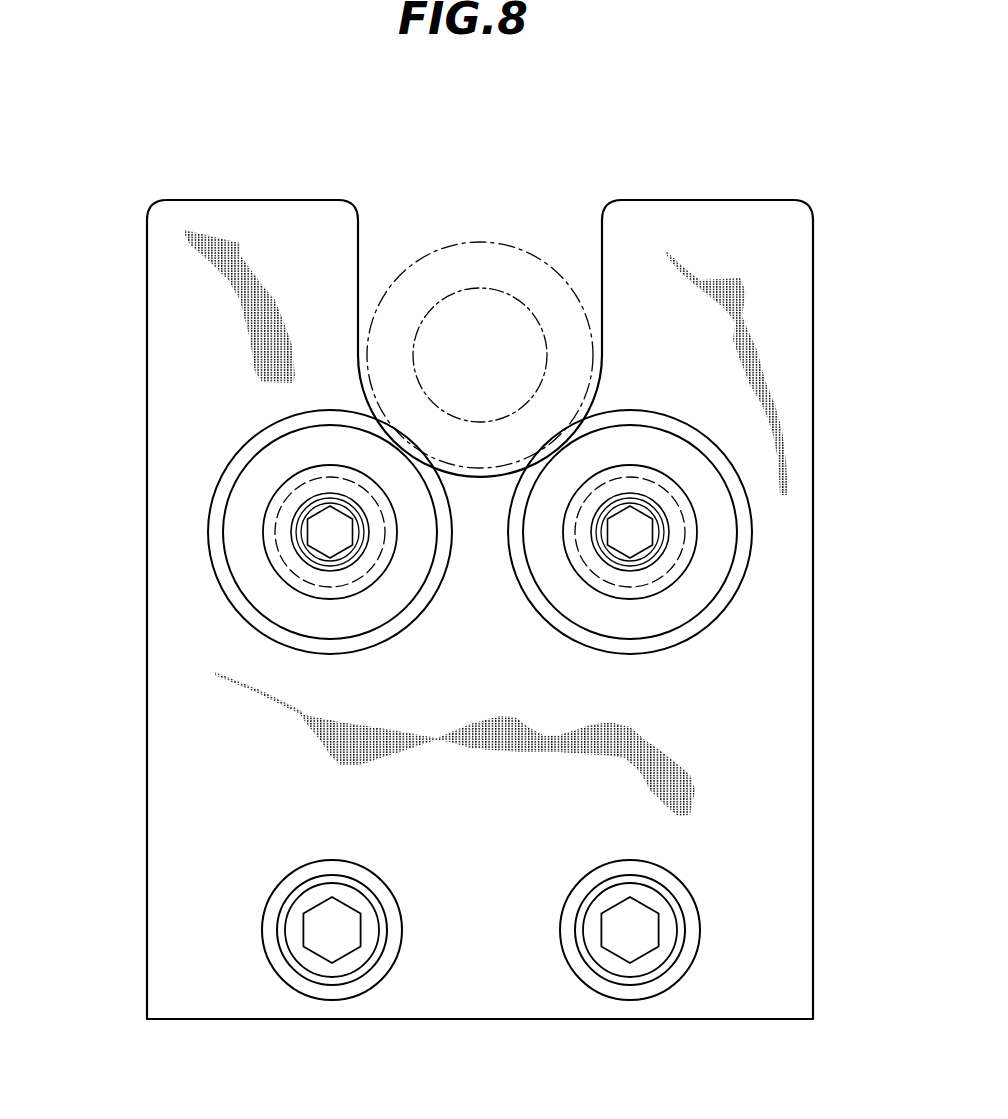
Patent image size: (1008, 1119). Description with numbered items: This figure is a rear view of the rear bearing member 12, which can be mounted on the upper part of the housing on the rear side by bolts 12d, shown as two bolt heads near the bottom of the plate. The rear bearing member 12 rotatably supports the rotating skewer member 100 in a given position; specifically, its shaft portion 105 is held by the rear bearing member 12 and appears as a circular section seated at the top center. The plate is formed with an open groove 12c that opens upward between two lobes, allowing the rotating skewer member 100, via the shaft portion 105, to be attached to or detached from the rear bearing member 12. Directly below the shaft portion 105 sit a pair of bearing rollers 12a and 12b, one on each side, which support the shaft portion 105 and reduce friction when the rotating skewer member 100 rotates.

The rear bearing member 12 is at (183, 278).
The bearing roller 12a is at (250, 497).
The bearing roller 12b is at (715, 500).
The open groove 12c is at (563, 195).
The bolt 12d is at (293, 908).
The rotating skewer member 100 is at (480, 284).
The shaft portion 105 is at (481, 242).